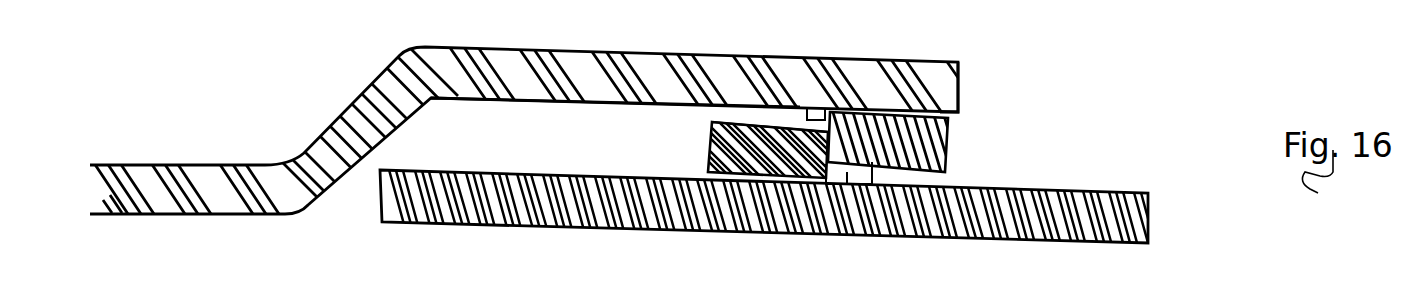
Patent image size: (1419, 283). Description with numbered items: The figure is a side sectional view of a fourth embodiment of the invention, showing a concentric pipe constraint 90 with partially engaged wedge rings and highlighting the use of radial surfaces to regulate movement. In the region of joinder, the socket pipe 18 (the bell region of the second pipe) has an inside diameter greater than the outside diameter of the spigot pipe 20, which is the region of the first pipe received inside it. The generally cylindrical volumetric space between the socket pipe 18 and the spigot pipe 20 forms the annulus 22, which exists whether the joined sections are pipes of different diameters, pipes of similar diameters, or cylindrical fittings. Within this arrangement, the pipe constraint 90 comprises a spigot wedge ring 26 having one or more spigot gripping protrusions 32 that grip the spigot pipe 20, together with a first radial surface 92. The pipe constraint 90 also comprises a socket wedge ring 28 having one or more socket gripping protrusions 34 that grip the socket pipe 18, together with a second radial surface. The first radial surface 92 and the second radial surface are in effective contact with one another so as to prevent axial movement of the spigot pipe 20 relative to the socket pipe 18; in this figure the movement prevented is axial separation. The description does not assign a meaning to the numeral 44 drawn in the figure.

The socket pipe 18 is at (652, 70).
The spigot pipe 20 is at (653, 217).
The annulus 22 is at (533, 133).
The spigot wedge ring 26 is at (770, 133).
The socket wedge ring 28 is at (873, 152).
The spigot gripping protrusions 32 is at (740, 185).
The socket gripping protrusions 34 is at (943, 112).
The gap 44 is at (812, 110).
The concentric pipe constraint 90 is at (1147, 152).
The first radial surface 92 is at (838, 188).